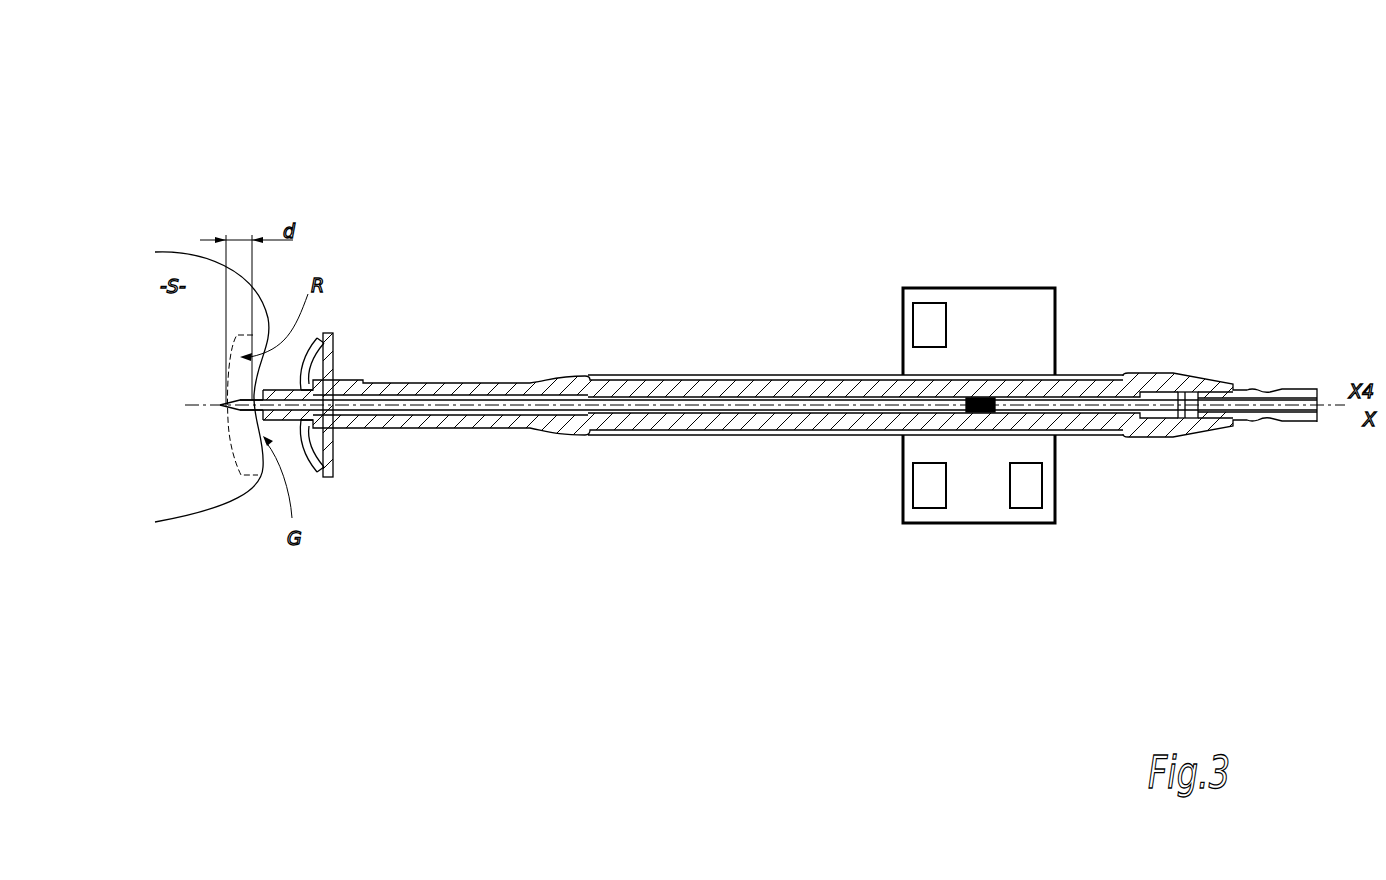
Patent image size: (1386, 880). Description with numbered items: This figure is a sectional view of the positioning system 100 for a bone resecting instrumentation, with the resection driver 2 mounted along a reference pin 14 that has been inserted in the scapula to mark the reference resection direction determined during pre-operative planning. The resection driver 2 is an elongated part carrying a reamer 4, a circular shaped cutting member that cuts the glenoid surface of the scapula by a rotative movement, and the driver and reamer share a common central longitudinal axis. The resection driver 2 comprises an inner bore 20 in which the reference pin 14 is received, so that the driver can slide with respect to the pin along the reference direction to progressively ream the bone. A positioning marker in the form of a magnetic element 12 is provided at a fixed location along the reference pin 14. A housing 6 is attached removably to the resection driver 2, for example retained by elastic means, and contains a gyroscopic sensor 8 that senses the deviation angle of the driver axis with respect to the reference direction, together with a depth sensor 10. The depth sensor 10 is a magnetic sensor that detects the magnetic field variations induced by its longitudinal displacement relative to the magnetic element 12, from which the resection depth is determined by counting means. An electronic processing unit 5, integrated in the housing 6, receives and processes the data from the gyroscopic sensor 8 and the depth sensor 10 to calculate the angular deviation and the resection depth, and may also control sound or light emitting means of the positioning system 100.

The positioning system 100 is at (1088, 278).
The resection driver 2 is at (565, 383).
The reamer 4 is at (332, 333).
The electronic processing unit 5 is at (1027, 483).
The housing 6 is at (1047, 285).
The gyroscopic sensor 8 is at (928, 325).
The depth sensor 10 is at (928, 484).
The magnetic element 12 is at (975, 398).
The reference pin 14 is at (1095, 395).
The inner bore 20 is at (1190, 416).